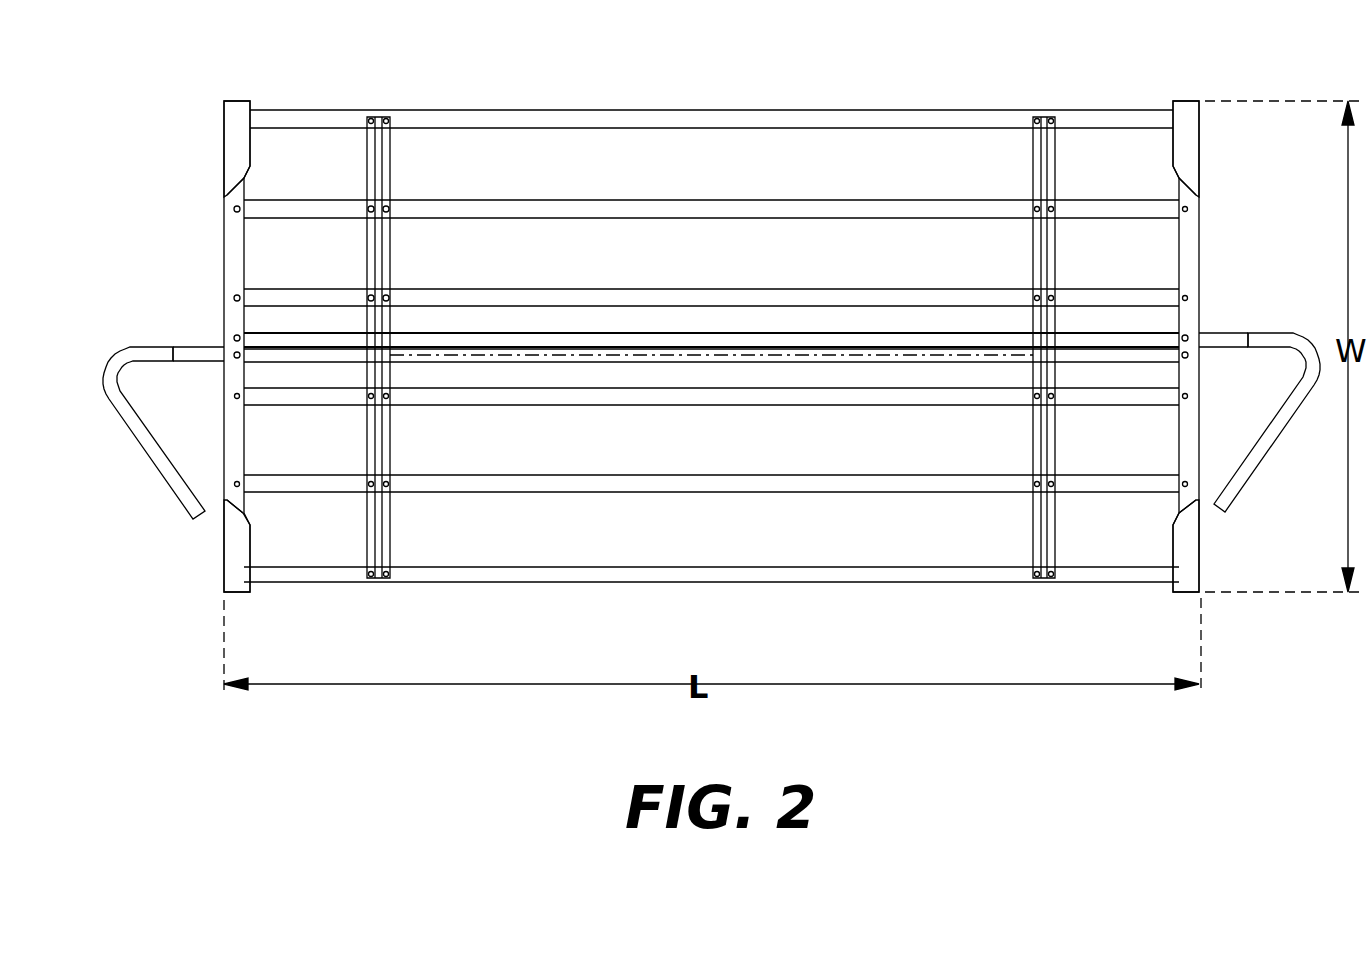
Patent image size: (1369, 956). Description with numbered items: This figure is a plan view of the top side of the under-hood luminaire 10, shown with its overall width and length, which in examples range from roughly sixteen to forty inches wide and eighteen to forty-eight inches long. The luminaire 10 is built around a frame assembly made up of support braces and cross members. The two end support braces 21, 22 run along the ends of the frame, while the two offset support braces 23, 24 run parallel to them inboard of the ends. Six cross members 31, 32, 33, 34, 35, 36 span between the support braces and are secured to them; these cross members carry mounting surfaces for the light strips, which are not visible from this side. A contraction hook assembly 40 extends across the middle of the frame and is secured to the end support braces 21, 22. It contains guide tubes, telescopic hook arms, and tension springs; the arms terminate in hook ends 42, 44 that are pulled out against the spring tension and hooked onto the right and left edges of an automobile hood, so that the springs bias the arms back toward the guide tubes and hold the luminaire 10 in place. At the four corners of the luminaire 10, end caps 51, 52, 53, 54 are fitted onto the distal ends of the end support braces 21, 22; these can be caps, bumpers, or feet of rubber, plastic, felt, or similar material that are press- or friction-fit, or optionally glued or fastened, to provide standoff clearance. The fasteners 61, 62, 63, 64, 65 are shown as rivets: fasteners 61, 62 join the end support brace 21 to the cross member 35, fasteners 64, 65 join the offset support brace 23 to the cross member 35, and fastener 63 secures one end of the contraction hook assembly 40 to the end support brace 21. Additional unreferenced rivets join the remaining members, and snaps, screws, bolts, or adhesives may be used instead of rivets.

The luminaire 10 is at (183, 66).
The end support brace 21 is at (1188, 232).
The end support brace 22 is at (226, 262).
The offset support brace 23 is at (1030, 268).
The offset support brace 24 is at (380, 160).
The cross member 31 is at (482, 572).
The cross member 32 is at (488, 482).
The cross member 33 is at (420, 402).
The cross member 34 is at (505, 292).
The cross member 35 is at (505, 205).
The cross member 36 is at (505, 115).
The contraction hook assembly 40 is at (687, 352).
The hook end 42 is at (100, 372).
The hook end 44 is at (1260, 482).
The end cap 51 is at (236, 101).
The end cap 52 is at (1182, 101).
The end cap 53 is at (236, 594).
The end cap 54 is at (1190, 550).
The fastener 61 is at (234, 209).
The fastener 62 is at (234, 298).
The fastener 63 is at (234, 338).
The fastener 64 is at (370, 206).
The fastener 65 is at (370, 295).